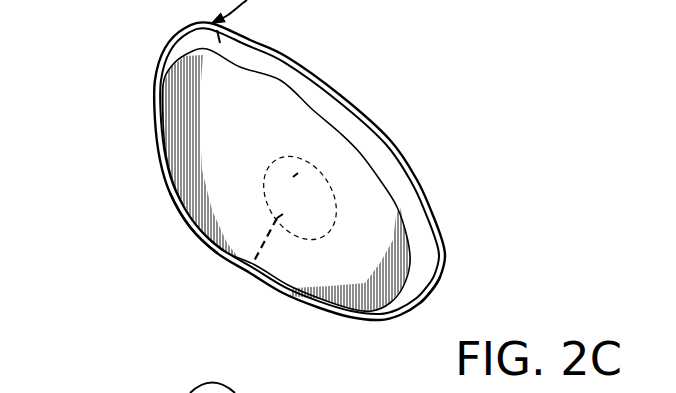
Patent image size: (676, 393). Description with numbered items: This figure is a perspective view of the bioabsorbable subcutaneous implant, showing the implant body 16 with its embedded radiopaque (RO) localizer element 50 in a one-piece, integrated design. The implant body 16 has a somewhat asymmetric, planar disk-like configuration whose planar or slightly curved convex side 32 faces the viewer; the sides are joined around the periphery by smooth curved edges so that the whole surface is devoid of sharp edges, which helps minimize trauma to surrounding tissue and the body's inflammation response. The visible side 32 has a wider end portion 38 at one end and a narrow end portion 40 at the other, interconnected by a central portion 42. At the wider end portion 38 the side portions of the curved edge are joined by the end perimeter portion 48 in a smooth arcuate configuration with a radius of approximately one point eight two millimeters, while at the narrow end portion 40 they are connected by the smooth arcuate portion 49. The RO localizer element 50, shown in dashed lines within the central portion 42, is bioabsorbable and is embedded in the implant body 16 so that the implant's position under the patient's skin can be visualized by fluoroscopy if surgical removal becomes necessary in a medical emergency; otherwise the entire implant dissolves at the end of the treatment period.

The implant body 16 is at (470, 133).
The end perimeter portion 48 is at (161, 57).
The central portion 42 is at (233, 135).
The wider end portion 38 is at (177, 100).
The convex side 32 is at (193, 150).
The narrow end portion 40 is at (393, 270).
The radiopaque localizer element 50 is at (298, 173).
The radiopaque RO is at (253, 263).
The smooth arcuate portion 49 is at (436, 297).